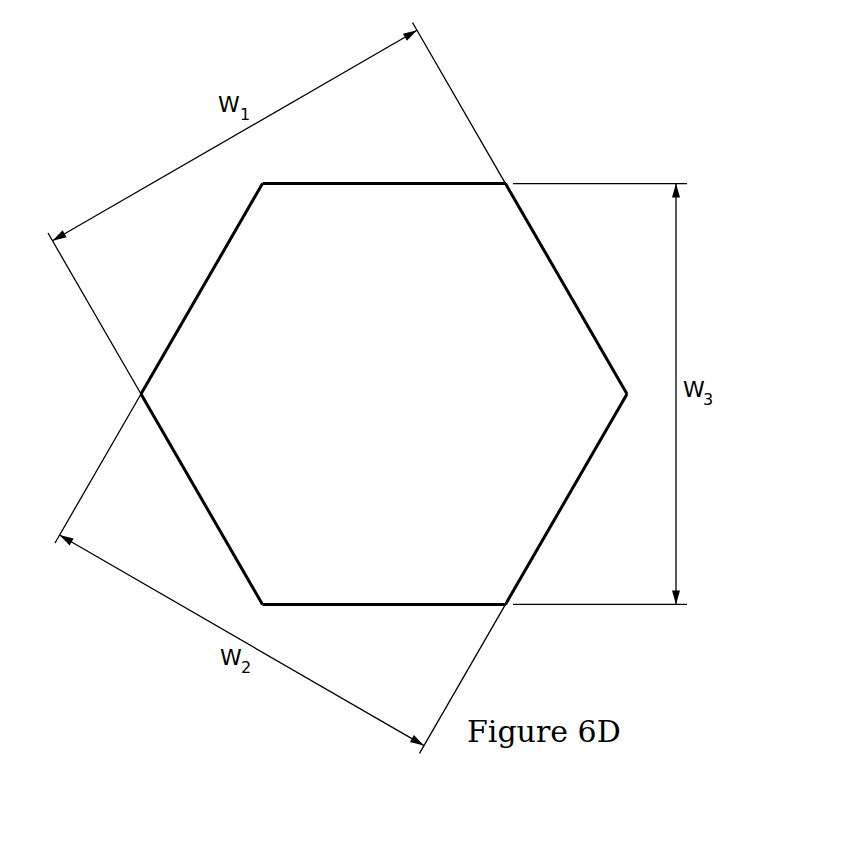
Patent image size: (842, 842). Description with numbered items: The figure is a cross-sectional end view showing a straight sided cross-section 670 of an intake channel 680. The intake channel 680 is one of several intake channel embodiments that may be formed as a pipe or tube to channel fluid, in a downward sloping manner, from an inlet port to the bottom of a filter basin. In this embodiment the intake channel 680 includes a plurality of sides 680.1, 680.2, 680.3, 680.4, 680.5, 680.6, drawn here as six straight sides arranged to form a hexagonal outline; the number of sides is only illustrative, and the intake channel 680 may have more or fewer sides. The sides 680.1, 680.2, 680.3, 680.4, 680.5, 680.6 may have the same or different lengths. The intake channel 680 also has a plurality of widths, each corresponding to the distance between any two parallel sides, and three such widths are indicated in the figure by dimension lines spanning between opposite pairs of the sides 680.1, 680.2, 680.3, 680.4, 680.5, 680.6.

The straight sided cross-section 670 is at (530, 106).
The intake channel 680 is at (415, 180).
The side 680.1 is at (544, 243).
The side 680.2 is at (330, 182).
The side 680.3 is at (205, 268).
The side 680.4 is at (216, 528).
The side 680.5 is at (369, 606).
The side 680.6 is at (568, 503).